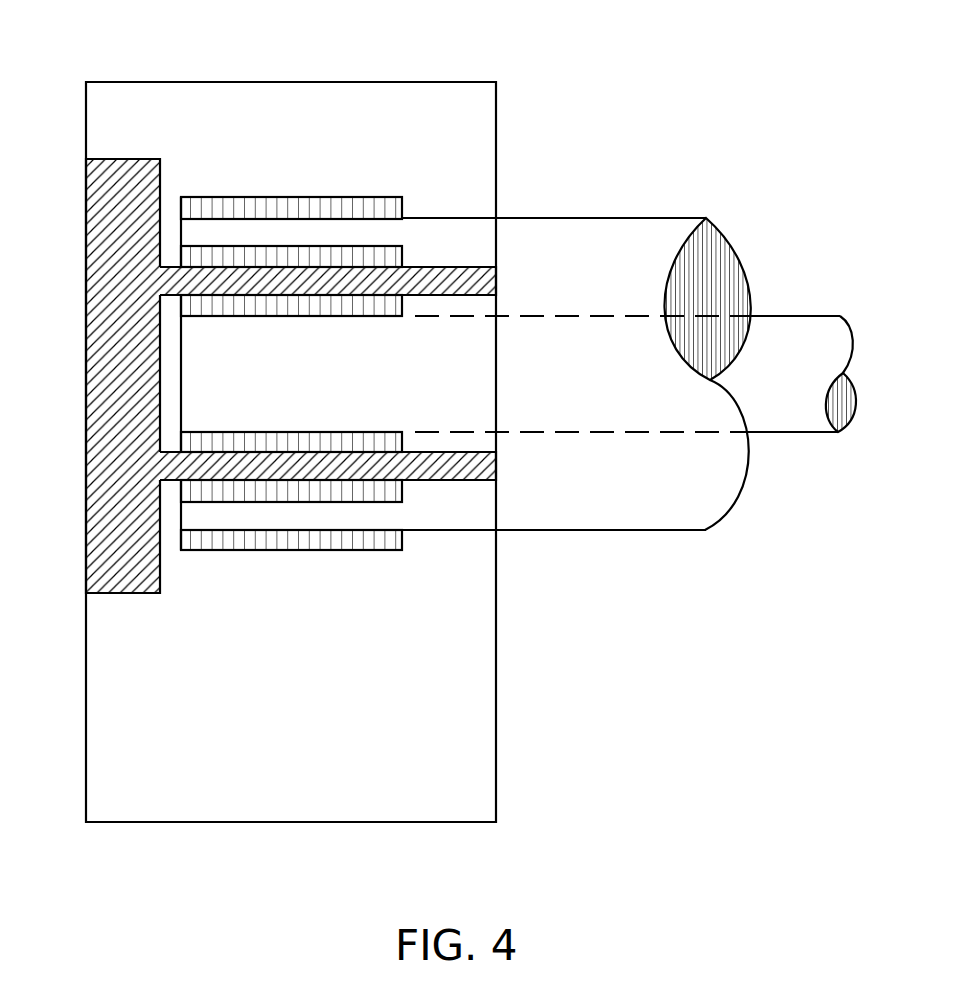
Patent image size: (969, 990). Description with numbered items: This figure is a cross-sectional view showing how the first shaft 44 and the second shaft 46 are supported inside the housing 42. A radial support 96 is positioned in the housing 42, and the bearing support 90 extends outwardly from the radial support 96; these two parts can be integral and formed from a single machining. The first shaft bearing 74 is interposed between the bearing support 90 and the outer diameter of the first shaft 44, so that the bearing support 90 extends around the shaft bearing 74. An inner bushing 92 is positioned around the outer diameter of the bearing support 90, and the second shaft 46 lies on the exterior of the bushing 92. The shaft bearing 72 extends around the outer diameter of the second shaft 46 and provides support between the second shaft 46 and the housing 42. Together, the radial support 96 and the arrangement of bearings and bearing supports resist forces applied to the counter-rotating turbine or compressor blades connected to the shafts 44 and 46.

The housing 42 is at (444, 82).
The first shaft 44 is at (783, 332).
The second shaft 46 is at (643, 242).
The shaft bearing 72 is at (270, 550).
The shaft bearing 74 is at (390, 316).
The bearing support 90 is at (463, 267).
The inner bushing 92 is at (402, 497).
The radial support 96 is at (108, 357).